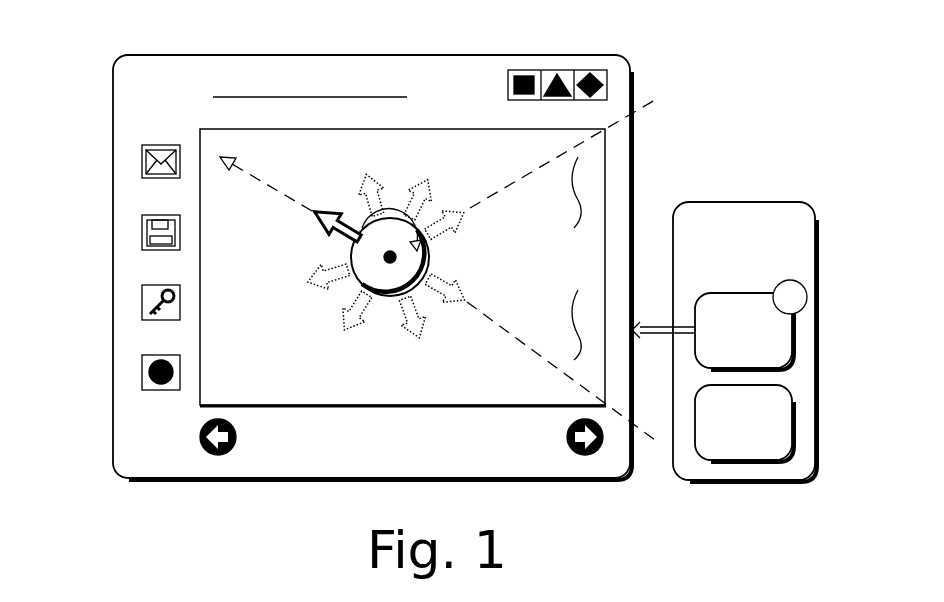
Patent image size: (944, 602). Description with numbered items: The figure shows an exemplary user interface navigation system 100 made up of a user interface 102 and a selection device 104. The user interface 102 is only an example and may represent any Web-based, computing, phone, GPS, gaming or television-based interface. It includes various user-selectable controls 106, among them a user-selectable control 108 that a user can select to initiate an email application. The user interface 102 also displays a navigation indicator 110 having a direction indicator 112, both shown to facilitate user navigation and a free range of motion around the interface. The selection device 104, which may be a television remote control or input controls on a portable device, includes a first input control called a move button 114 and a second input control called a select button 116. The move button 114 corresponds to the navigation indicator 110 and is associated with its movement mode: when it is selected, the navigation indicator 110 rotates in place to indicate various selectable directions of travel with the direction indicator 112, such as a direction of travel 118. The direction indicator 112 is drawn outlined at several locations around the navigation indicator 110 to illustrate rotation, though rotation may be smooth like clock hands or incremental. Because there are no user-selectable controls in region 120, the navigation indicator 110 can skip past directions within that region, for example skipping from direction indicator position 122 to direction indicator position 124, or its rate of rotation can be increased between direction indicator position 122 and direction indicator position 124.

The user interface navigation system 100 is at (722, 92).
The user interface 102 is at (372, 267).
The selection device 104 is at (740, 202).
The user-selectable controls 106 is at (535, 68).
The user-selectable control 108 is at (142, 152).
The navigation indicator 110 is at (367, 270).
The direction indicator 112 is at (325, 232).
The move button 114 is at (751, 325).
The select button 116 is at (744, 423).
The direction of travel 118 is at (278, 183).
The region 120 is at (567, 258).
The direction indicator position 122 is at (562, 167).
The direction indicator position 124 is at (412, 255).